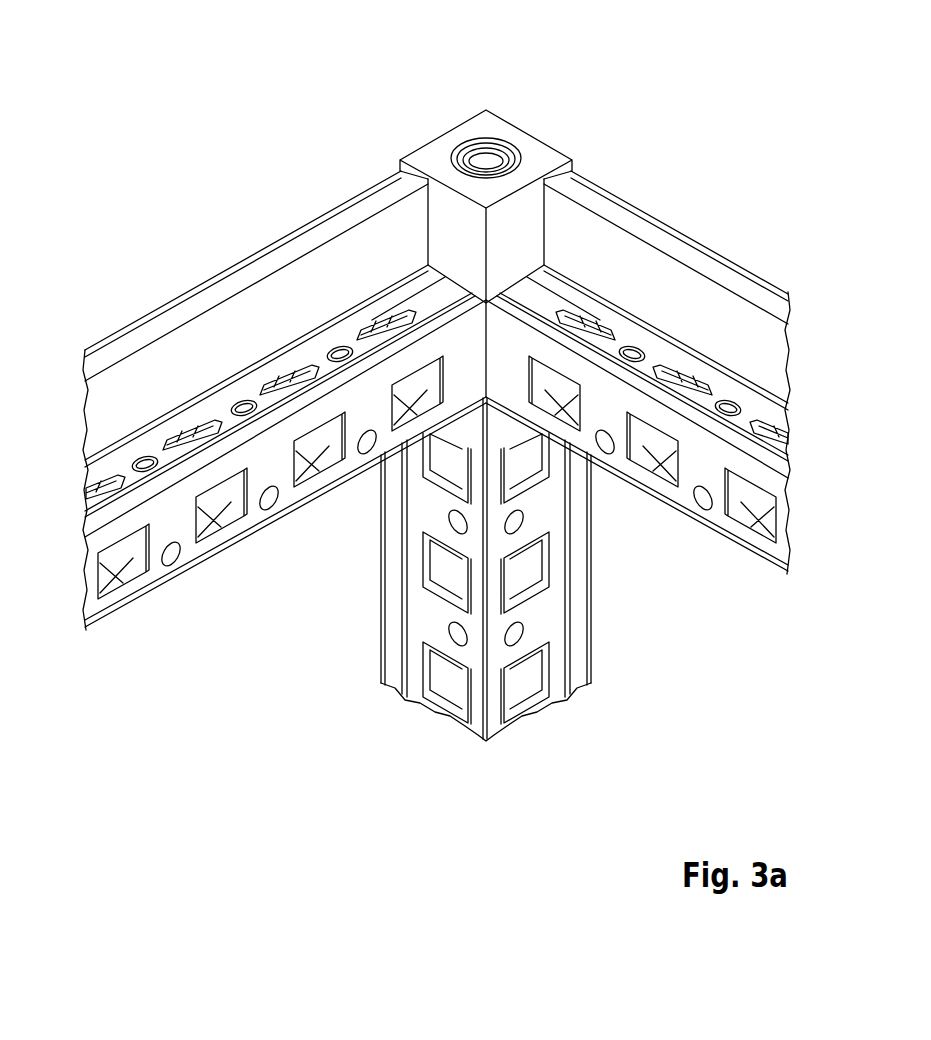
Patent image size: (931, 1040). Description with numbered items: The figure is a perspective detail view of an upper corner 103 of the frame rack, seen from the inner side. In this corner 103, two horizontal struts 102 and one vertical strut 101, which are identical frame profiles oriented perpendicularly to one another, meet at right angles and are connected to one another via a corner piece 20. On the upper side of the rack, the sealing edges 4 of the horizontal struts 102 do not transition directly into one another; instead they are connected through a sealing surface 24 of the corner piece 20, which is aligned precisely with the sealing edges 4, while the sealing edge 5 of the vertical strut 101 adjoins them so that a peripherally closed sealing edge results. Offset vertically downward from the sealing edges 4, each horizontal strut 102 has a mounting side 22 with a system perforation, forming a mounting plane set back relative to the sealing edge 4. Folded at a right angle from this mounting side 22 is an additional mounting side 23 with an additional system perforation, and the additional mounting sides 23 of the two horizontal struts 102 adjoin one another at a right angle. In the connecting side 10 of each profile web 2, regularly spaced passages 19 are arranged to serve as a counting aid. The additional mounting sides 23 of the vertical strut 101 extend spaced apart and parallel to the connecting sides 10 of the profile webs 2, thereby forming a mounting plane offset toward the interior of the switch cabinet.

The profile web 2 is at (113, 355).
The sealing edge 4 is at (270, 247).
The sealing edge 5 is at (380, 653).
The connecting side 10 is at (352, 267).
The passage 19 is at (176, 390).
The corner piece 20 is at (495, 122).
The mounting side 22 is at (128, 462).
The additional mounting side 23 is at (199, 560).
The sealing surface 24 is at (444, 146).
The vertical strut 101 is at (408, 762).
The horizontal strut 102 is at (172, 243).
The corner 103 is at (458, 60).